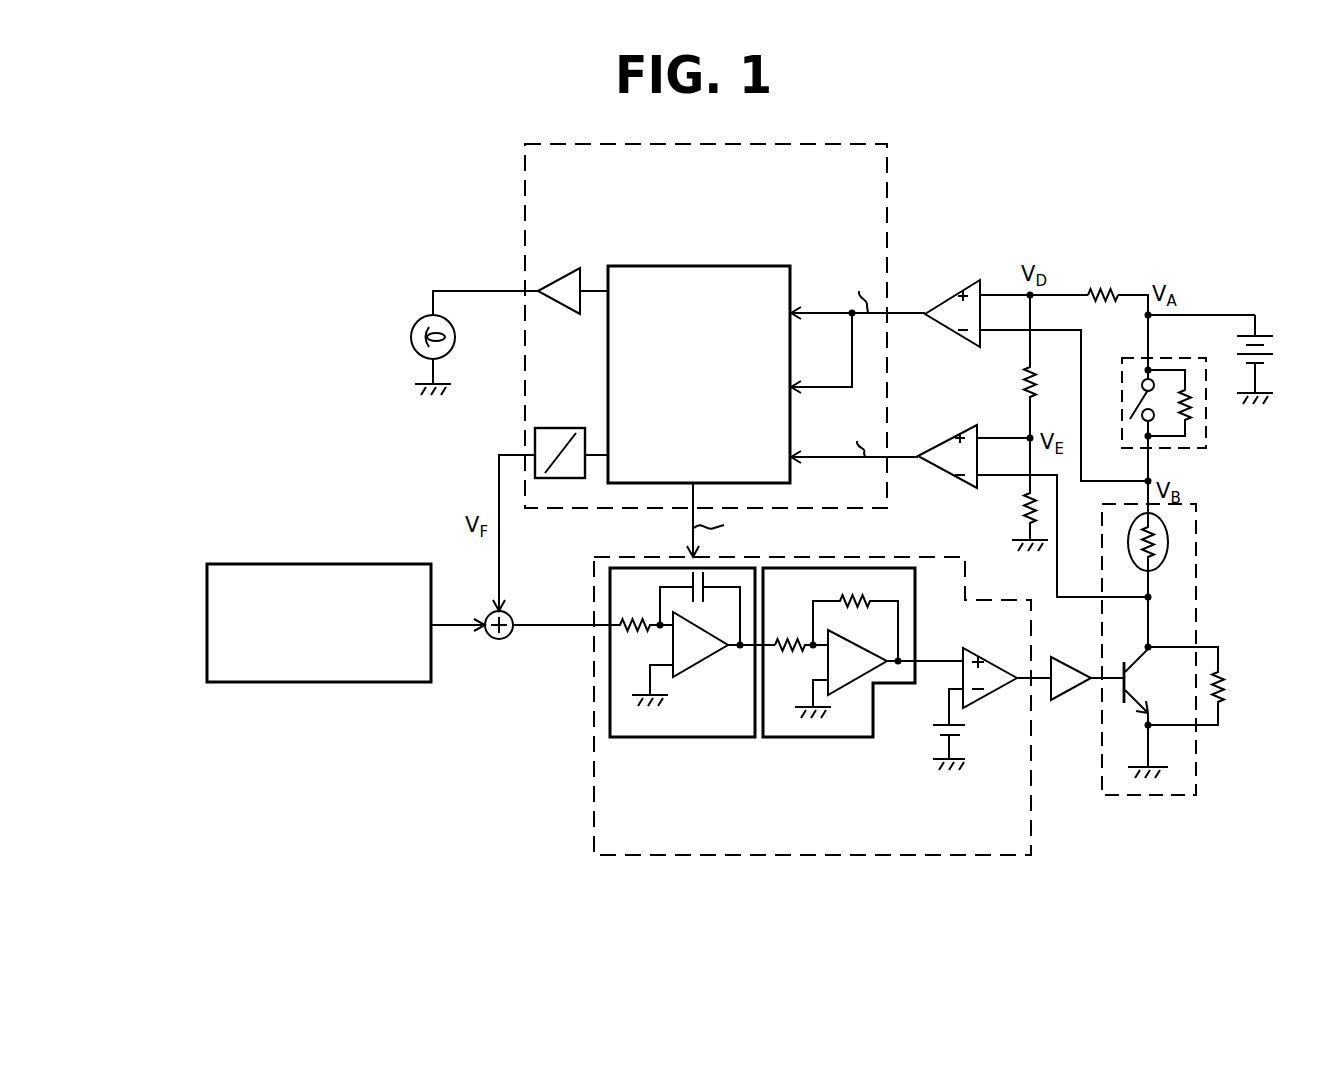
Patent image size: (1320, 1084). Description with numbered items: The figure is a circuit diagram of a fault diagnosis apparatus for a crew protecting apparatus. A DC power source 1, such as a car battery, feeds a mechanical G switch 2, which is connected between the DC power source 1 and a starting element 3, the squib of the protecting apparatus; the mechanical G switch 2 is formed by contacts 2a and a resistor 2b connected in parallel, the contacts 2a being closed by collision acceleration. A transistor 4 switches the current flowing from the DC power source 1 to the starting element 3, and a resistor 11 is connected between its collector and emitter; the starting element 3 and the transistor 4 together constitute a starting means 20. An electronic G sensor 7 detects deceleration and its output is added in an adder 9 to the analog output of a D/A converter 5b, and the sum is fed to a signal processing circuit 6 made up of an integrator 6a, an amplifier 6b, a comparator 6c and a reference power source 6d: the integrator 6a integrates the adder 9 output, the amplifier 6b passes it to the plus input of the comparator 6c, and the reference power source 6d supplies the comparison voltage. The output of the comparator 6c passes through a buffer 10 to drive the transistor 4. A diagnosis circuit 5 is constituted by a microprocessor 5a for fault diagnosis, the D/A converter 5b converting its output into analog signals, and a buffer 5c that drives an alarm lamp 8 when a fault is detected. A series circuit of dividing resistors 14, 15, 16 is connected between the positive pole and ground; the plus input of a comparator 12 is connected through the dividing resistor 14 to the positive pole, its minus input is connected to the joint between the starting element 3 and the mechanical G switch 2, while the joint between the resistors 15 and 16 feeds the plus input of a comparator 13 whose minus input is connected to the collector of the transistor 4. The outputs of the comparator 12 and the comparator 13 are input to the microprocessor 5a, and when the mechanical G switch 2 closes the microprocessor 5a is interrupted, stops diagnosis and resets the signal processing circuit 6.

The DC power source 1 is at (1273, 342).
The mechanical G switch 2 is at (1185, 410).
The contacts 2a is at (1141, 395).
The resistor 2b is at (1195, 407).
The starting element 3 is at (1168, 547).
The transistor 4 is at (1136, 661).
The diagnosis circuit 5 is at (887, 175).
The microprocessor 5a is at (697, 268).
The D/A converter 5b is at (553, 428).
The buffer 5c is at (553, 312).
The signal processing circuit 6 is at (594, 831).
The integrator 6a is at (684, 738).
The amplifier 6b is at (808, 738).
The comparator 6c is at (998, 661).
The reference power source 6d is at (965, 731).
The electronic G sensor 7 is at (302, 564).
The alarm lamp 8 is at (411, 338).
The adder 9 is at (504, 639).
The buffer 10 is at (1072, 700).
The resistor 11 is at (1230, 688).
The comparator 12 is at (953, 284).
The comparator 13 is at (950, 432).
The dividing resistor 14 is at (1104, 288).
The dividing resistor 15 is at (1020, 375).
The dividing resistor 16 is at (1020, 515).
The starting means 20 is at (1197, 783).